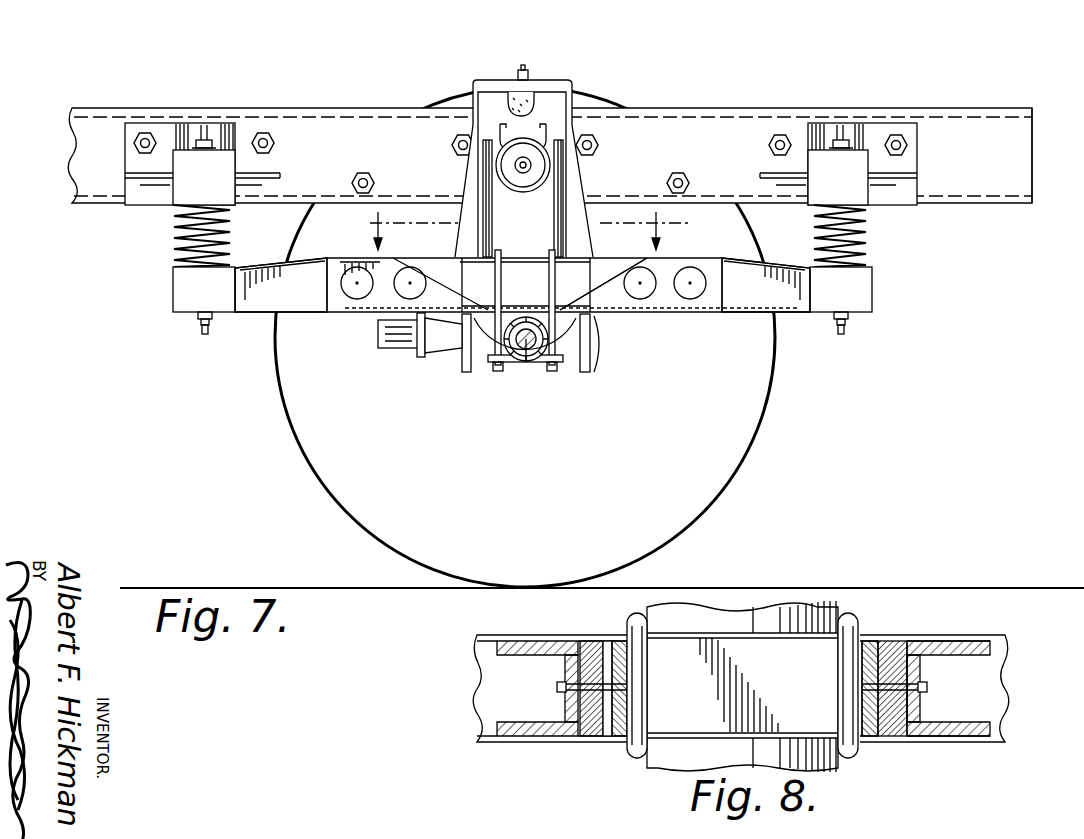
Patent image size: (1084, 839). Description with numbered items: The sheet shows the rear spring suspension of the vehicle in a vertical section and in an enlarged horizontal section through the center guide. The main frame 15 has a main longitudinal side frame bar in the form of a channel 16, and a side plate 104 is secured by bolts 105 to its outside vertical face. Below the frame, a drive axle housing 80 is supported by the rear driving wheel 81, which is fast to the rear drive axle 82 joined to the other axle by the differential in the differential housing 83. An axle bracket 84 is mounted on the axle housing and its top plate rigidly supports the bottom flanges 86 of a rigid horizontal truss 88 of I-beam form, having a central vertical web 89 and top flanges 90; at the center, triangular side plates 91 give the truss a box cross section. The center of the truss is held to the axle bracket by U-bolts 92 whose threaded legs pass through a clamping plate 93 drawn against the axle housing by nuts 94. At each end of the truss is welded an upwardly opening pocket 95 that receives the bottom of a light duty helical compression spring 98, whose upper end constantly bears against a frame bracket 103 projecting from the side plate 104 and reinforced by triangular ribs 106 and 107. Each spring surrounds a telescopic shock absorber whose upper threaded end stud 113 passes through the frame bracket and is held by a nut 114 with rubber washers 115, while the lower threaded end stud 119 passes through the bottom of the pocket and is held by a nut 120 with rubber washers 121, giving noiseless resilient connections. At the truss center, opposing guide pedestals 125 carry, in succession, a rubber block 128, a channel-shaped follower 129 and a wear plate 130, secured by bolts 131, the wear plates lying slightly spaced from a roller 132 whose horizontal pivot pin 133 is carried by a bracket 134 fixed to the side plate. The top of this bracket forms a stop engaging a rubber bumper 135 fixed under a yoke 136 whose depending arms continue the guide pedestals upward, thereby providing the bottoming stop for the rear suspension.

In FIG. 7, the main frame 15 is at (1016, 108).
In FIG. 7, the channel 16 is at (1030, 197).
In FIG. 7, the drive axle housing 80 is at (570, 348).
In FIG. 8, the drive axle housing 80 is at (664, 768).
In FIG. 7, the rear driving wheel 81 is at (748, 462).
In FIG. 7, the rear drive axle 82 is at (532, 368).
In FIG. 7, the differential housing 83 is at (502, 398).
In FIG. 7, the axle bracket 84 is at (466, 368).
In FIG. 7, the bottom flange 86 is at (694, 312).
In FIG. 7, the axle beam or truss 88 is at (274, 266).
In FIG. 8, the axle beam or truss 88 is at (478, 690).
In FIG. 7, the central vertical web 89 is at (262, 300).
In FIG. 7, the top flange 90 is at (700, 262).
In FIG. 8, the top flange 90 is at (1004, 666).
In FIG. 7, the triangular side plate 91 is at (598, 282).
In FIG. 8, the triangular side plate 91 is at (976, 640).
In FIG. 7, the U-bolt 92 is at (548, 270).
In FIG. 8, the U-bolt 92 is at (647, 688).
In FIG. 7, the clamping plate 93 is at (520, 368).
In FIG. 7, the nut 94 is at (542, 356).
In FIG. 7, the box or pocket 95 is at (873, 294).
In FIG. 7, the light duty helical compression spring 98 is at (174, 230).
In FIG. 7, the frame bracket 103 is at (240, 185).
In FIG. 7, the side plate 104 is at (690, 125).
In FIG. 7, the bolt 105 is at (134, 143).
In FIG. 7, the triangular rib 106 is at (170, 134).
In FIG. 7, the triangular rib 107 is at (130, 174).
In FIG. 7, the threaded end stud 113 is at (205, 120).
In FIG. 7, the nut 114 is at (202, 140).
In FIG. 7, the rubber washer 115 is at (194, 144).
In FIG. 7, the threaded end stud 119 is at (204, 334).
In FIG. 7, the nut 120 is at (200, 324).
In FIG. 7, the rubber washer 121 is at (196, 316).
In FIG. 7, the guide pedestal 125 is at (455, 240).
In FIG. 8, the guide pedestal 125 is at (532, 658).
In FIG. 7, the rubber block 128 is at (554, 246).
In FIG. 8, the rubber block 128 is at (588, 638).
In FIG. 7, the channel-shaped follower 129 is at (554, 231).
In FIG. 8, the channel-shaped follower 129 is at (600, 736).
In FIG. 7, the wear plate 130 is at (554, 215).
In FIG. 8, the wear plate 130 is at (618, 640).
In FIG. 8, the bolt 131 is at (557, 686).
In FIG. 7, the roller 132 is at (498, 176).
In FIG. 7, the horizontal pivot pin 133 is at (516, 162).
In FIG. 7, the bracket 134 is at (542, 135).
In FIG. 7, the rubber bumper 135 is at (526, 100).
In FIG. 7, the yoke 136 is at (490, 80).